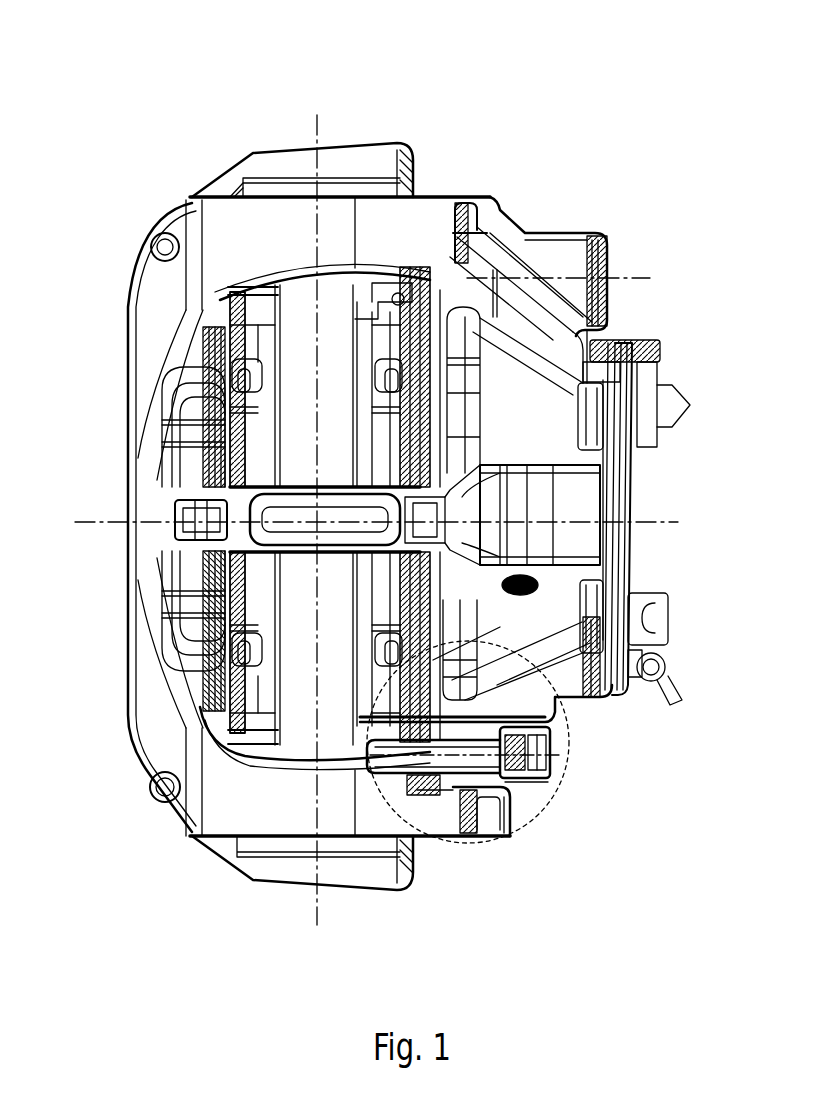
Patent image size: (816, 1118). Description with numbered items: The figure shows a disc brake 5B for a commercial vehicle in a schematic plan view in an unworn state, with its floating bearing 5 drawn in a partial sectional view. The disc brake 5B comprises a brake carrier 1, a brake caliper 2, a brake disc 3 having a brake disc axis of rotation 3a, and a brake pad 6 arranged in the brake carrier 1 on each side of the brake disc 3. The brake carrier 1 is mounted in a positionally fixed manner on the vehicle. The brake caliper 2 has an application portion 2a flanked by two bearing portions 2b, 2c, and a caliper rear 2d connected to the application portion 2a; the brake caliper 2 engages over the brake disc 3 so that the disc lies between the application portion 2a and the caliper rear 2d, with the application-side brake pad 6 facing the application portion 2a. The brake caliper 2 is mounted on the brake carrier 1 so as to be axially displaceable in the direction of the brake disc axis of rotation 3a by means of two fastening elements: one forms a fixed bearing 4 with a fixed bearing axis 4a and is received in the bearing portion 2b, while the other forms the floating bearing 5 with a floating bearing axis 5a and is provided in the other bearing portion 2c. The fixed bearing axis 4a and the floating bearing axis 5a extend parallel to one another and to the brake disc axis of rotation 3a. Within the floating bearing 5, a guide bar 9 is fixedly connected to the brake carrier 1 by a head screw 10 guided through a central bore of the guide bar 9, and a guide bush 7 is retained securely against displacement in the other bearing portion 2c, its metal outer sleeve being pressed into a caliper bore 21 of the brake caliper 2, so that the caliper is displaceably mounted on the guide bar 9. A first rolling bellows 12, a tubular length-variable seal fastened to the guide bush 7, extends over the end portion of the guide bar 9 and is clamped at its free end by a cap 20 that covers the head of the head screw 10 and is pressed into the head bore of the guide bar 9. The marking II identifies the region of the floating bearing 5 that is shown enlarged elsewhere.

The disc brake 5B is at (227, 84).
The brake carrier 1 is at (357, 153).
The brake caliper 2 is at (485, 195).
The application portion 2a is at (450, 290).
The bearing portion 2b is at (556, 250).
The other bearing portion 2c is at (440, 810).
The caliper rear 2d is at (153, 710).
The brake disc 3 is at (315, 122).
The brake disc axis of rotation 3a is at (76, 523).
The fixed bearing 4 is at (618, 262).
The fixed bearing axis 4a is at (617, 278).
The floating bearing 5 is at (578, 758).
The floating bearing axis 5a is at (553, 752).
The brake pad 6 is at (262, 325).
The guide bush 7 is at (508, 810).
The guide bar 9 is at (470, 807).
The head screw 10 is at (398, 852).
The first rolling bellows 12 is at (548, 786).
The cap 20 is at (550, 773).
The caliper bore 21 is at (490, 803).
The marking II is at (543, 820).